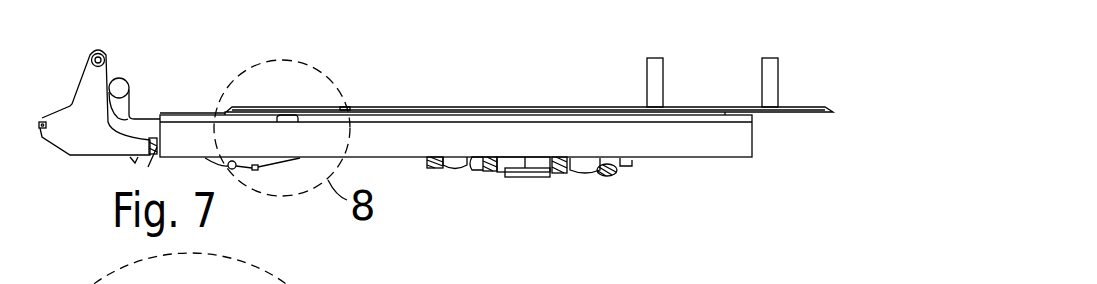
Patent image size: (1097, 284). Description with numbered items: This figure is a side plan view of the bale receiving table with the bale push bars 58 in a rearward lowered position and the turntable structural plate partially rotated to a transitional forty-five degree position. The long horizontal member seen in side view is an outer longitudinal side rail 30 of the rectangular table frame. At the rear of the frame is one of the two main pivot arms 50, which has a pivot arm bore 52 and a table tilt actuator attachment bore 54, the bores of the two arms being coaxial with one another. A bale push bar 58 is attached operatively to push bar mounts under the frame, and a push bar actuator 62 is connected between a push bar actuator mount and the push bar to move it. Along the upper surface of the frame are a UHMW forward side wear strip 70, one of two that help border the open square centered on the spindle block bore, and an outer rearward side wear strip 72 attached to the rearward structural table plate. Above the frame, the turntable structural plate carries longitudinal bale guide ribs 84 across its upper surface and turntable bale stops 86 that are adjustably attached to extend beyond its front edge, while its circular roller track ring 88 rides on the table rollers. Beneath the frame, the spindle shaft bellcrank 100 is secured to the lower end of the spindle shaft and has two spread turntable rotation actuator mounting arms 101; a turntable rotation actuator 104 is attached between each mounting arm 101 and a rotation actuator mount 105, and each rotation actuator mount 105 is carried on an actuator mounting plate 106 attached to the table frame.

The outer longitudinal side rail 30 is at (182, 148).
The main pivot arm 50 is at (85, 82).
The pivot arm bore 52 is at (98, 53).
The table tilt actuator attachment bore 54 is at (43, 121).
The bale push bar 58 is at (129, 85).
The push bar actuator 62 is at (262, 165).
The forward side wear strip 70 is at (422, 120).
The outer rearward side wear strip 72 is at (282, 116).
The bale guide rib 84 is at (382, 106).
The turntable bale stop 86 is at (658, 72).
The turntable roller track ring 88 is at (345, 107).
The spindle shaft bellcrank 100 is at (525, 177).
The turntable rotation actuator mounting arm 101 is at (488, 171).
The turntable rotation actuator 104 is at (458, 168).
The rotation actuator mount 105 is at (430, 168).
The actuator mounting plate 106 is at (625, 164).